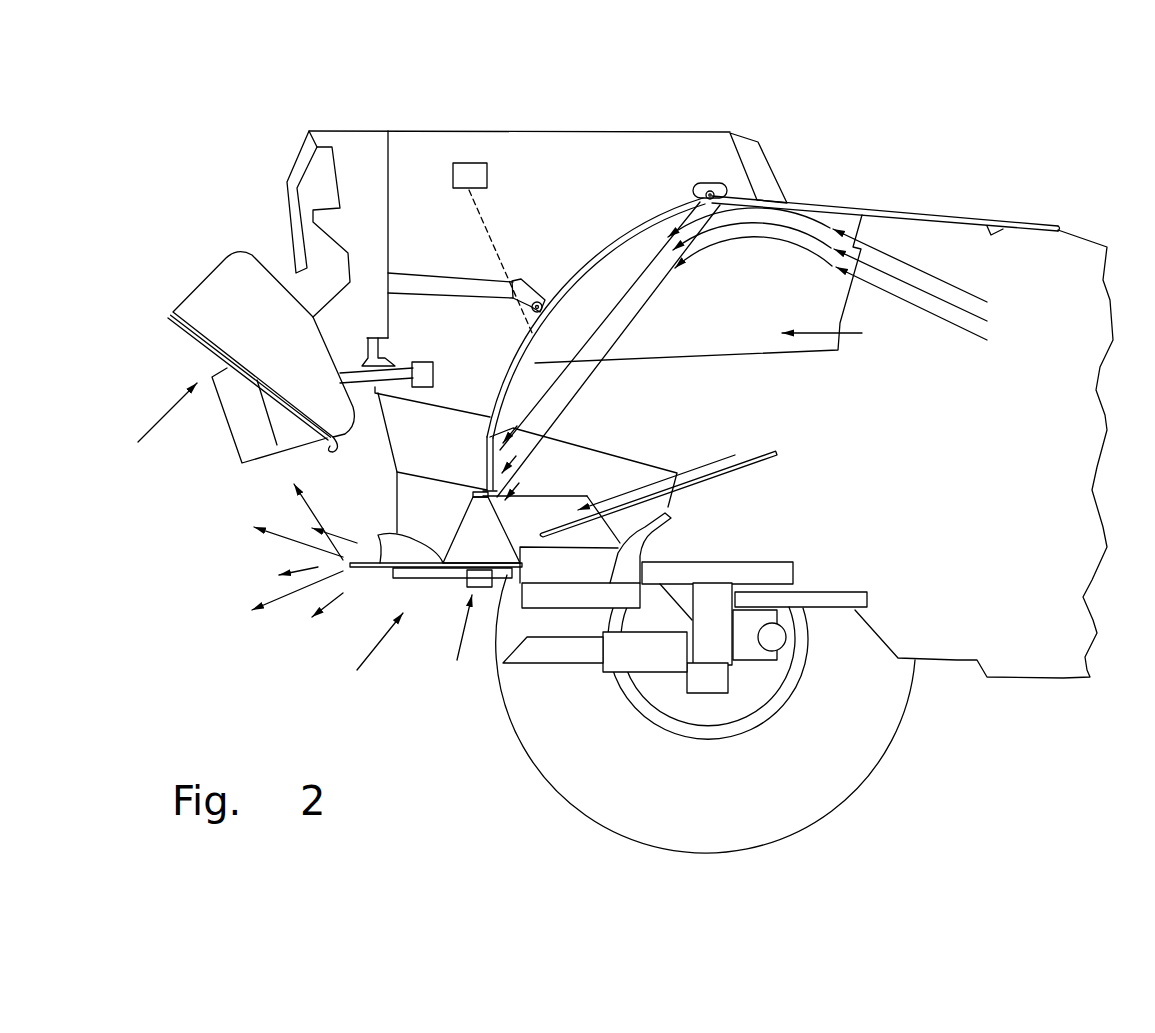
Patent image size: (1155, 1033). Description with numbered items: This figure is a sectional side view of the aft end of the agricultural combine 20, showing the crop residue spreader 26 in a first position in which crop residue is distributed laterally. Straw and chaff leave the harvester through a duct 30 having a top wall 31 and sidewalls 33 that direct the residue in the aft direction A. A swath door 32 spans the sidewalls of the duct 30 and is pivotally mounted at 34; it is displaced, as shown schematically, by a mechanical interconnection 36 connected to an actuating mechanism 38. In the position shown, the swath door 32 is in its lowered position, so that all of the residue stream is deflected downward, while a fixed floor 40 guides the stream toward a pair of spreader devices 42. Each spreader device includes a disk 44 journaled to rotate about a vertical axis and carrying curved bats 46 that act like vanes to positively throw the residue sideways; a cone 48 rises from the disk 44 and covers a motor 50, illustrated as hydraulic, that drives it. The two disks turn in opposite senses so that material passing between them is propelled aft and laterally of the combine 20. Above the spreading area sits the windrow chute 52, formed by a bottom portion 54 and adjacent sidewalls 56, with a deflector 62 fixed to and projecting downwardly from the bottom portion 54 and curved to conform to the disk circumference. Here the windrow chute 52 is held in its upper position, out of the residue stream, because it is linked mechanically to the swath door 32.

The agricultural combine 20 is at (1090, 136).
The crop residue spreader 26 is at (327, 590).
The duct 30 is at (949, 209).
The top wall 31 is at (1007, 237).
The swath door 32 is at (642, 227).
The sidewalls 33 is at (697, 328).
The pivot mounting 34 is at (712, 190).
The mechanical interconnection 36 is at (490, 228).
The actuating mechanism 38 is at (471, 172).
The fixed floor 40 is at (763, 455).
The spreader devices 42 is at (455, 644).
The disks 44 is at (402, 572).
The curved bats 46 is at (390, 540).
The cone 48 is at (473, 505).
The motor 50 is at (468, 585).
The windrow chute 52 is at (156, 425).
The bottom portion 54 is at (200, 338).
The sidewalls 56 is at (197, 290).
The deflector 62 is at (247, 437).
The aft direction A is at (831, 333).